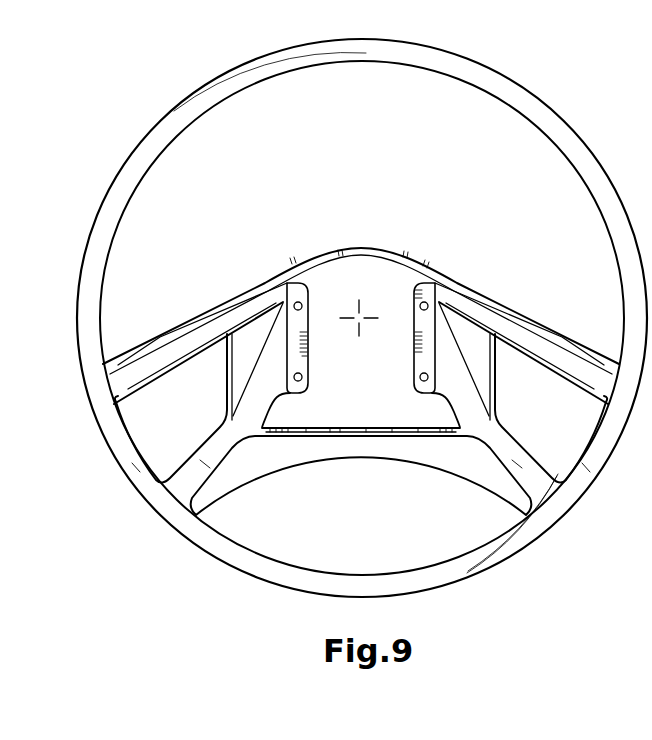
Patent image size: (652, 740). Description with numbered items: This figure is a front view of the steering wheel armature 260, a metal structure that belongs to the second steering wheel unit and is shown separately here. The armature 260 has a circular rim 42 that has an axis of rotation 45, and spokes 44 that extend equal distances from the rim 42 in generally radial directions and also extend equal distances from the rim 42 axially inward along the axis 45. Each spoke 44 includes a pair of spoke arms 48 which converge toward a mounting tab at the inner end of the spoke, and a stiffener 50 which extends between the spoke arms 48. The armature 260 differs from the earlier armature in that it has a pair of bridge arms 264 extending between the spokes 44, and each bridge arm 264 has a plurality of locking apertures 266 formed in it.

The rim 42 is at (400, 38).
The steering wheel armature 260 is at (157, 122).
The spokes 44 is at (222, 313).
The axis of rotation 45 is at (356, 313).
The spoke arms 48 is at (174, 355).
The stiffener 50 is at (226, 366).
The bridge arms 264 is at (363, 250).
The locking apertures 266 is at (340, 250).